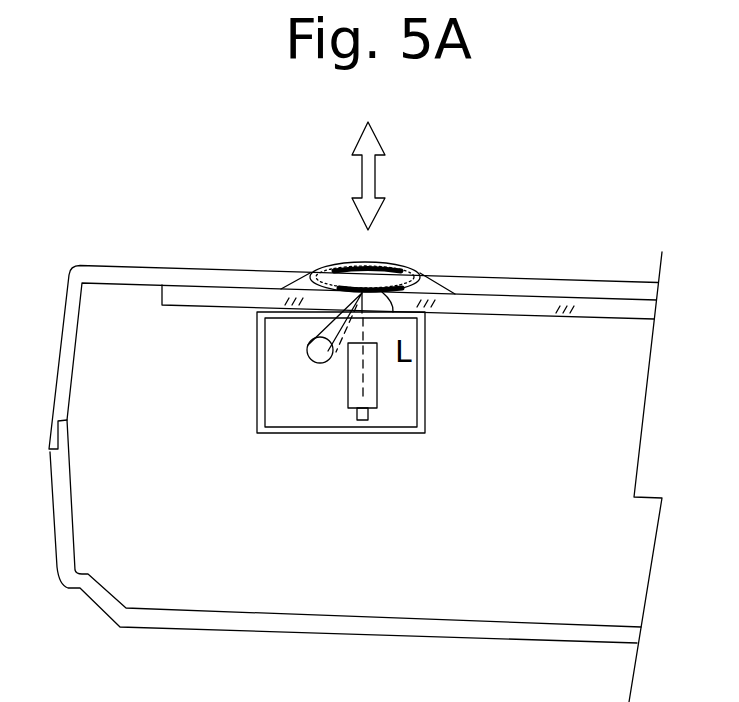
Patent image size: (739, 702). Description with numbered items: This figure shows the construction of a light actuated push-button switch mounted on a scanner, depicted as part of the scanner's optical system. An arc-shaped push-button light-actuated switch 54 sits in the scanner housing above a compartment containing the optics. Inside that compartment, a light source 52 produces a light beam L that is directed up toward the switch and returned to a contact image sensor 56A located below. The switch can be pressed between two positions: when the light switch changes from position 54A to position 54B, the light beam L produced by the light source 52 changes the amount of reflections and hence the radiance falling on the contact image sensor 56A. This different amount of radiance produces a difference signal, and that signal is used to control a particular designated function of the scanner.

The light source 52 is at (316, 348).
The arc-shaped push-button light-actuated switch 54 is at (320, 262).
The first position of the light switch 54A is at (380, 263).
The second position of the light switch 54B is at (393, 312).
The contact image sensor 56A is at (370, 398).